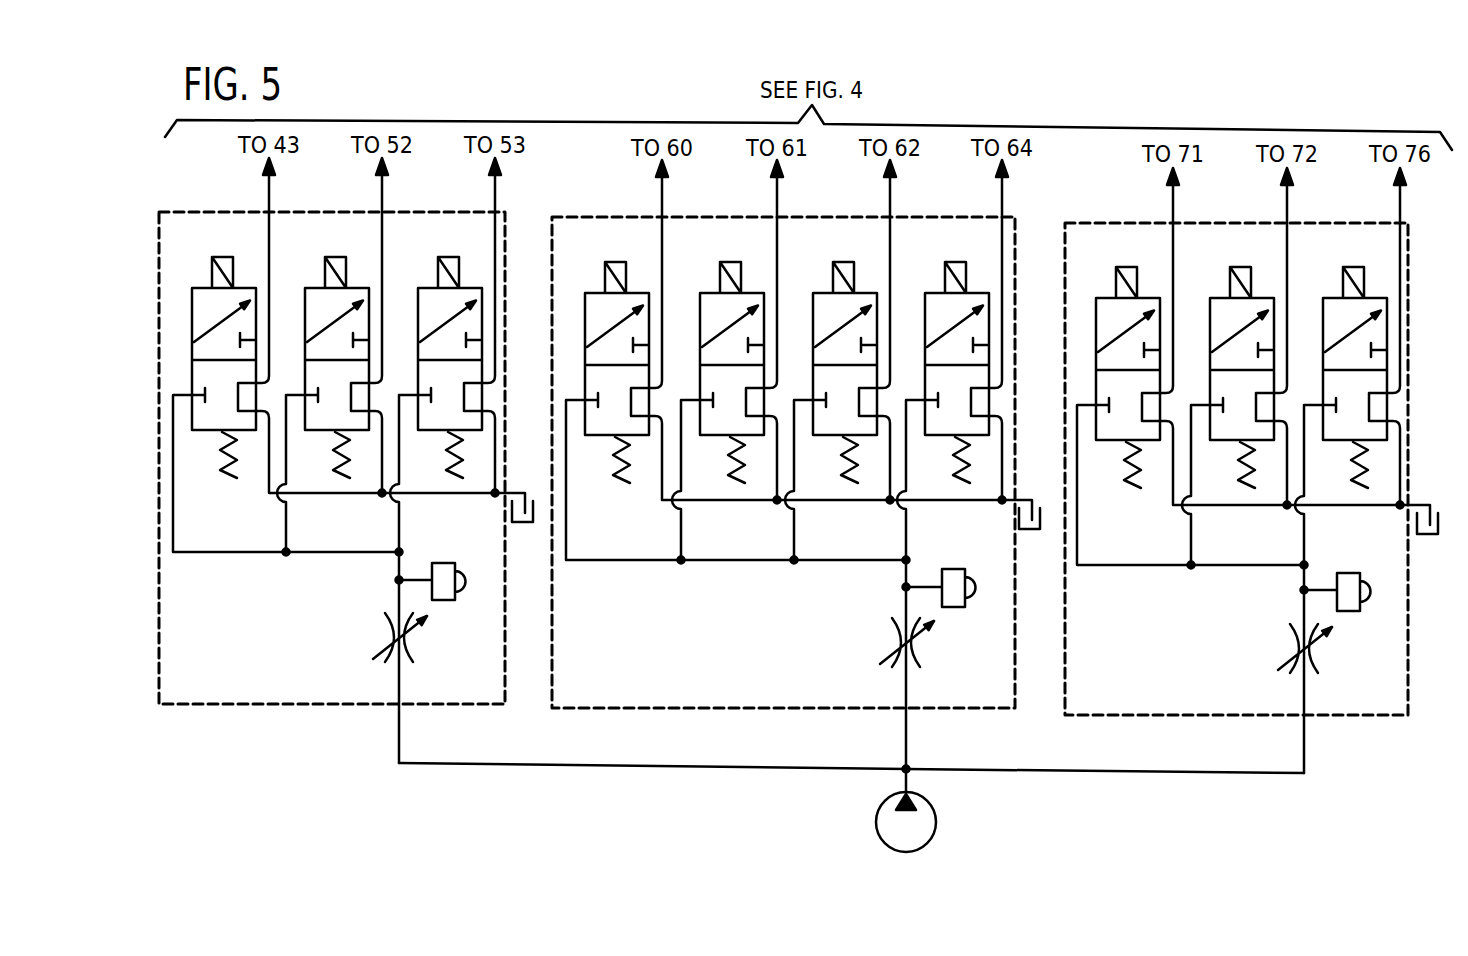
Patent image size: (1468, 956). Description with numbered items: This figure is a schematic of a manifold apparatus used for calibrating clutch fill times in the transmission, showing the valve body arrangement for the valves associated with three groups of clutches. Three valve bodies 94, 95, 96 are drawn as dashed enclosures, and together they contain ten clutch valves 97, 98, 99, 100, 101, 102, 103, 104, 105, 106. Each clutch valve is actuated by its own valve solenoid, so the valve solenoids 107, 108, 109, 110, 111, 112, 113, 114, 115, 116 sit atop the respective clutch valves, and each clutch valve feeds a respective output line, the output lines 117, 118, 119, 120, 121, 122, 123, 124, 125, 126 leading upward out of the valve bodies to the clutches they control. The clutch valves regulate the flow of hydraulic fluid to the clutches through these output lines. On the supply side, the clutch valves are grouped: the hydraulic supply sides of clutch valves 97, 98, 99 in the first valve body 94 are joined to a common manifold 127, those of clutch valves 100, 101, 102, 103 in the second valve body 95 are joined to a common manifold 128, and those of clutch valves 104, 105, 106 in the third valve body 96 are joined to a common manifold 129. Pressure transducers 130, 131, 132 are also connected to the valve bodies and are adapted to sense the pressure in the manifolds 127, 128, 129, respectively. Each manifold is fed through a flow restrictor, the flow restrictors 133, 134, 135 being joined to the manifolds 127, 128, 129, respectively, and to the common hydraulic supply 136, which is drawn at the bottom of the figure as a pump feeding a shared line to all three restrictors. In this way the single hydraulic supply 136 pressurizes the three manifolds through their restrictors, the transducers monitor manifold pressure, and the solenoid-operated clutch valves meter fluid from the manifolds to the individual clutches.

The valve body 94 is at (255, 710).
The valve body 95 is at (658, 714).
The valve body 96 is at (1155, 718).
The clutch valve 97 is at (210, 459).
The clutch valve 98 is at (323, 459).
The clutch valve 99 is at (436, 459).
The clutch valve 100 is at (600, 464).
The clutch valve 101 is at (715, 464).
The clutch valve 102 is at (828, 464).
The clutch valve 103 is at (940, 464).
The clutch valve 104 is at (1111, 469).
The clutch valve 105 is at (1225, 469).
The clutch valve 106 is at (1338, 469).
The valve solenoid 107 is at (211, 333).
The valve solenoid 108 is at (324, 333).
The valve solenoid 109 is at (437, 333).
The valve solenoid 110 is at (604, 338).
The valve solenoid 111 is at (719, 338).
The valve solenoid 112 is at (832, 338).
The valve solenoid 113 is at (944, 338).
The valve solenoid 114 is at (1115, 343).
The valve solenoid 115 is at (1229, 343).
The valve solenoid 116 is at (1342, 343).
The output line 117 is at (269, 198).
The output line 118 is at (382, 198).
The output line 119 is at (495, 198).
The output line 120 is at (662, 196).
The output line 121 is at (777, 196).
The output line 122 is at (890, 196).
The output line 123 is at (1002, 196).
The output line 124 is at (1173, 202).
The output line 125 is at (1287, 202).
The output line 126 is at (1400, 202).
The common manifold 127 is at (218, 553).
The common manifold 128 is at (713, 562).
The common manifold 129 is at (1128, 567).
The pressure transducer 130 is at (443, 563).
The pressure transducer 131 is at (947, 569).
The pressure transducer 132 is at (1343, 573).
The flow restrictor 133 is at (413, 648).
The flow restrictor 134 is at (920, 653).
The flow restrictor 135 is at (1318, 659).
The hydraulic supply 136 is at (936, 815).